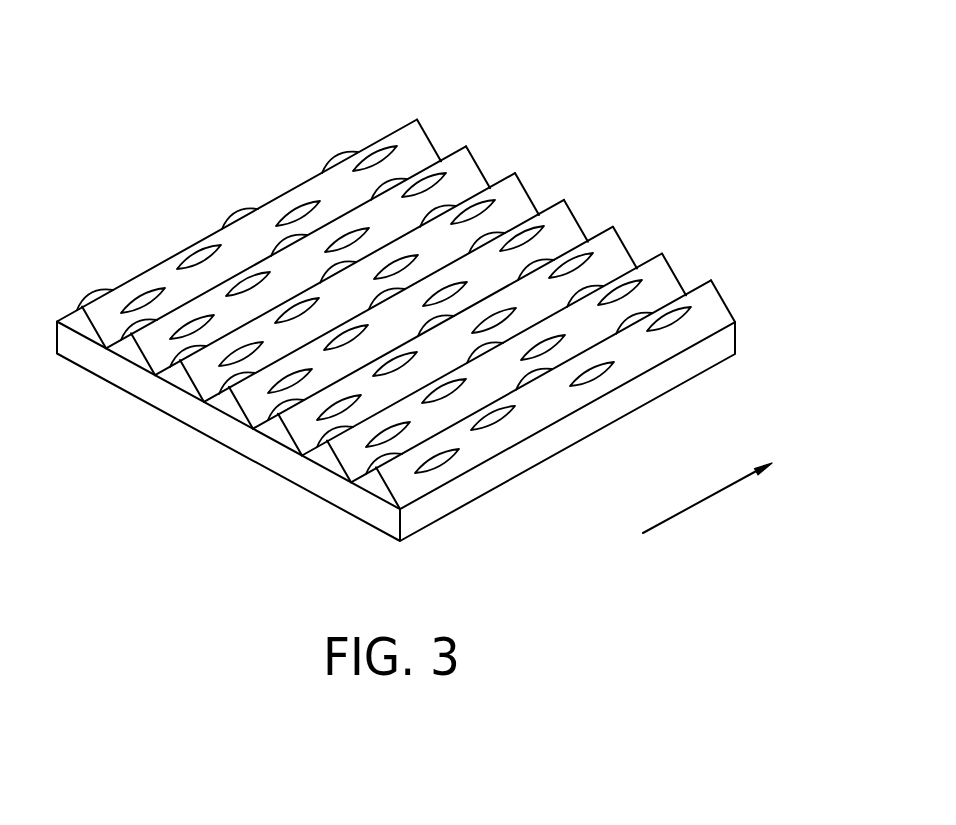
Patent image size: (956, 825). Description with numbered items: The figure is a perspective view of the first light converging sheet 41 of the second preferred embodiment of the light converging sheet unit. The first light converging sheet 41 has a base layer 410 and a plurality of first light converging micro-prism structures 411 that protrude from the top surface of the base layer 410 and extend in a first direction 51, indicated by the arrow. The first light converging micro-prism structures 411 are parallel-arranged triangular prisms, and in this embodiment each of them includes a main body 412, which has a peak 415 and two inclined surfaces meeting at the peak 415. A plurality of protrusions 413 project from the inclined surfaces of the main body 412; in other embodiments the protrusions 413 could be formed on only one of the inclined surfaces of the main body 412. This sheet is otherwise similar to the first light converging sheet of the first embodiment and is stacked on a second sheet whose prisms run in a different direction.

The first light converging sheet 41 is at (439, 273).
The base layer 410 is at (717, 347).
The first light converging micro-prism structures 411 is at (397, 102).
The main body 412 is at (247, 237).
The protrusions 413 is at (73, 306).
The peak 415 is at (613, 228).
The first direction 51 is at (725, 486).